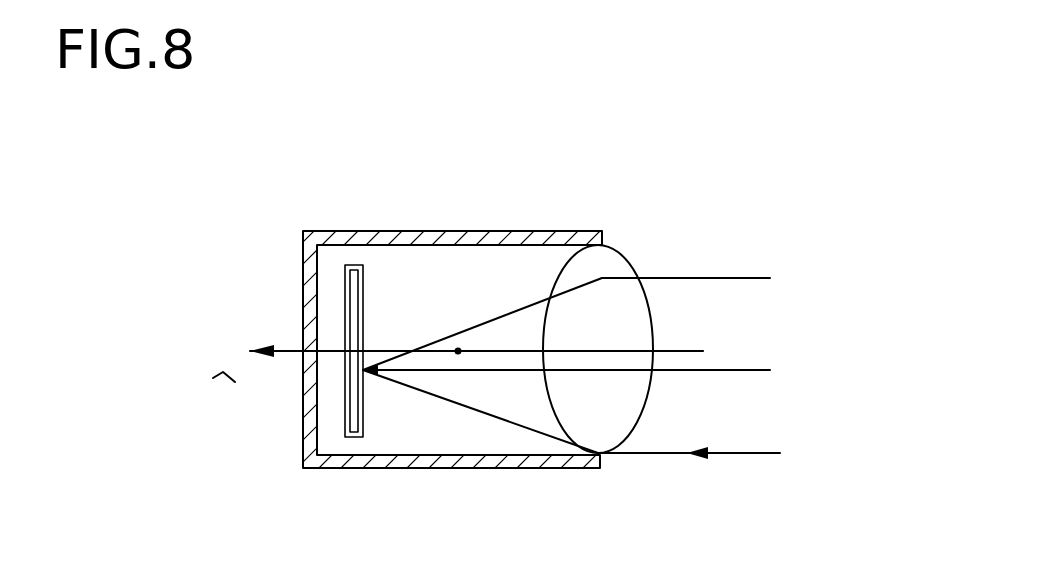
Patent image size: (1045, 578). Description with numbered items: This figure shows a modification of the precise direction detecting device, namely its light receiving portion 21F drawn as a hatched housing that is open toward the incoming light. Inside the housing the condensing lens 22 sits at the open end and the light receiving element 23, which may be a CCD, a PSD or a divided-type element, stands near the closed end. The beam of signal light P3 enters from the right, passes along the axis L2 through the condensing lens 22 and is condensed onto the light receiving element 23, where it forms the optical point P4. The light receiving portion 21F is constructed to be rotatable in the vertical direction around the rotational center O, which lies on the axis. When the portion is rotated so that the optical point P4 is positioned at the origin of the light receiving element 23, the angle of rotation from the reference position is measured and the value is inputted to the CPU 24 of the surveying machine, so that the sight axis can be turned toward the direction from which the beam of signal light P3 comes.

The light receiving portion 21F is at (523, 222).
The condensing lens 22 is at (615, 265).
The light receiving element 23 is at (362, 410).
The CPU 24 is at (422, 356).
The rotational center O is at (460, 353).
The optical axis L2 is at (677, 351).
The beam of signal light P3 is at (744, 456).
The optical point P4 is at (363, 372).